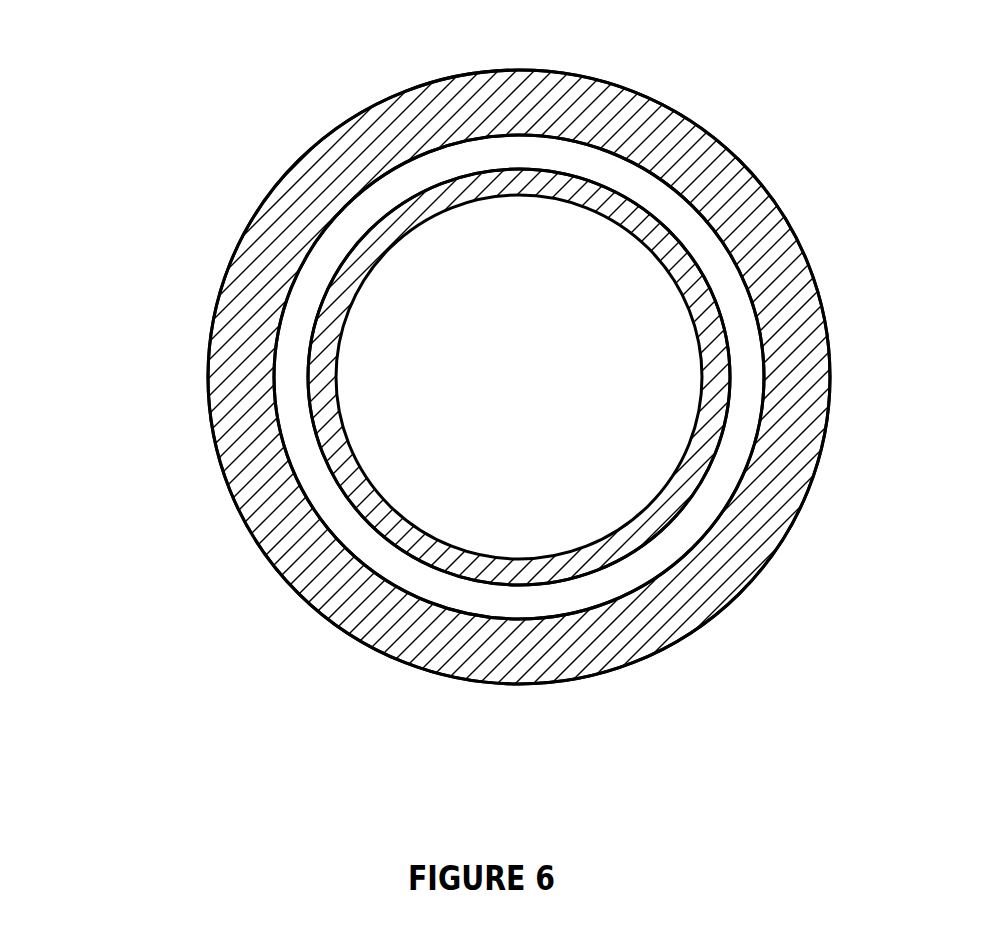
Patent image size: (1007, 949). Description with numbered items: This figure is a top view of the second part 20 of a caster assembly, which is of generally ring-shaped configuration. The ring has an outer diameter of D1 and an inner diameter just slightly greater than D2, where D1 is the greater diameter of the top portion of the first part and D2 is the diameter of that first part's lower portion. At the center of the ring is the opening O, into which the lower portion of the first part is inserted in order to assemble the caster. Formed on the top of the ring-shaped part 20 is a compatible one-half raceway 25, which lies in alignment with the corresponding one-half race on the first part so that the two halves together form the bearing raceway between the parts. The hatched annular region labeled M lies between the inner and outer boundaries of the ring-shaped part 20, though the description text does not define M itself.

The second part 20 is at (297, 120).
The one-half raceway 25 is at (713, 221).
The outer diameter D1 is at (240, 238).
The diameter of portion T2 D2 is at (598, 183).
The inner ring member M is at (697, 312).
The opening O is at (398, 377).